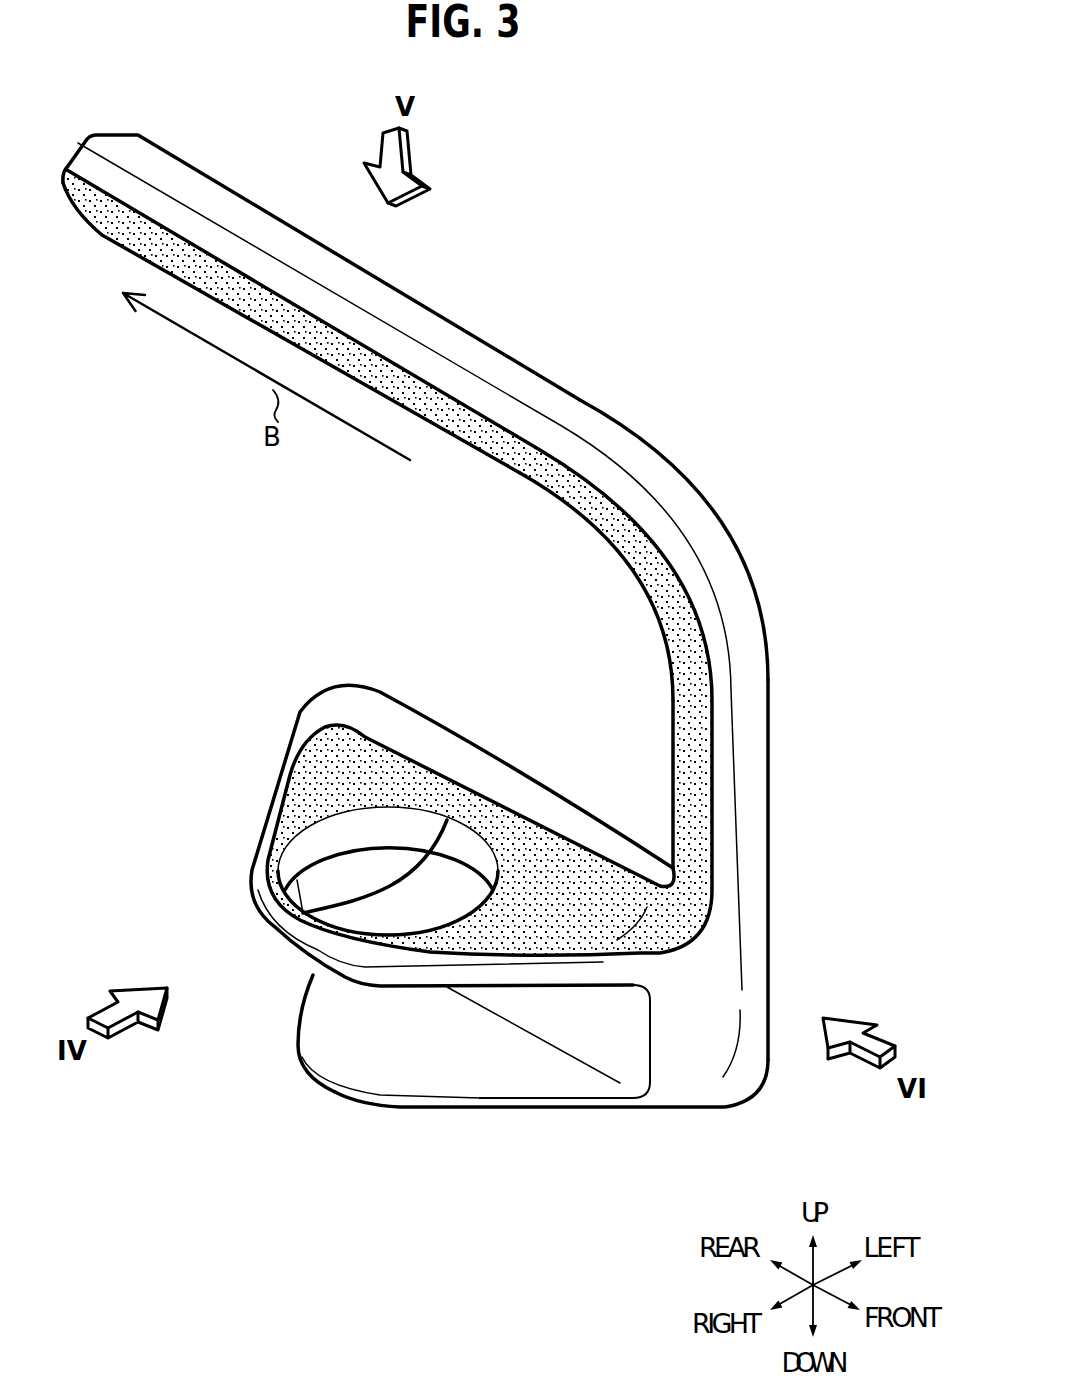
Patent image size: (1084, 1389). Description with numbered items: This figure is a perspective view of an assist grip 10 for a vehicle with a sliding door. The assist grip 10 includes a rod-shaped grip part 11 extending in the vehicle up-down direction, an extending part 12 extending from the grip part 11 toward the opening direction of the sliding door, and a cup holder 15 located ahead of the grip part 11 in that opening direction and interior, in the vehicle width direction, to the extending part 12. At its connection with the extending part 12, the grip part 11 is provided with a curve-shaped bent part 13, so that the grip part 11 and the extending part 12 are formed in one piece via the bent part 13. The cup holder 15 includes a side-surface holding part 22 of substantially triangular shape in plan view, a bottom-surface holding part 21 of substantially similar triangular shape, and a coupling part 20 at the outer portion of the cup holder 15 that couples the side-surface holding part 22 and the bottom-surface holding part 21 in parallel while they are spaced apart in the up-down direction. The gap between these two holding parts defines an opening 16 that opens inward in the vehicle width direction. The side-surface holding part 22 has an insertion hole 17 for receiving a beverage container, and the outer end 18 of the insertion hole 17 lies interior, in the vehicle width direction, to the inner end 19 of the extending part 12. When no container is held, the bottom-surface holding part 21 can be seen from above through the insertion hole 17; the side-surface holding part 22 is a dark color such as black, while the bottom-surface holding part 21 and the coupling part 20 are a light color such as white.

The assist grip 10 is at (762, 548).
The grip part 11 is at (753, 784).
The extending part 12 is at (372, 272).
The bent part 13 is at (700, 523).
The cup holder 15 is at (390, 1037).
The opening 16 is at (327, 1060).
The insertion hole 17 is at (347, 823).
The outer end 18 is at (302, 912).
The inner end 19 is at (233, 287).
The coupling part 20 is at (552, 1010).
The bottom-surface holding part 21 is at (583, 1087).
The side-surface holding part 22 is at (530, 908).